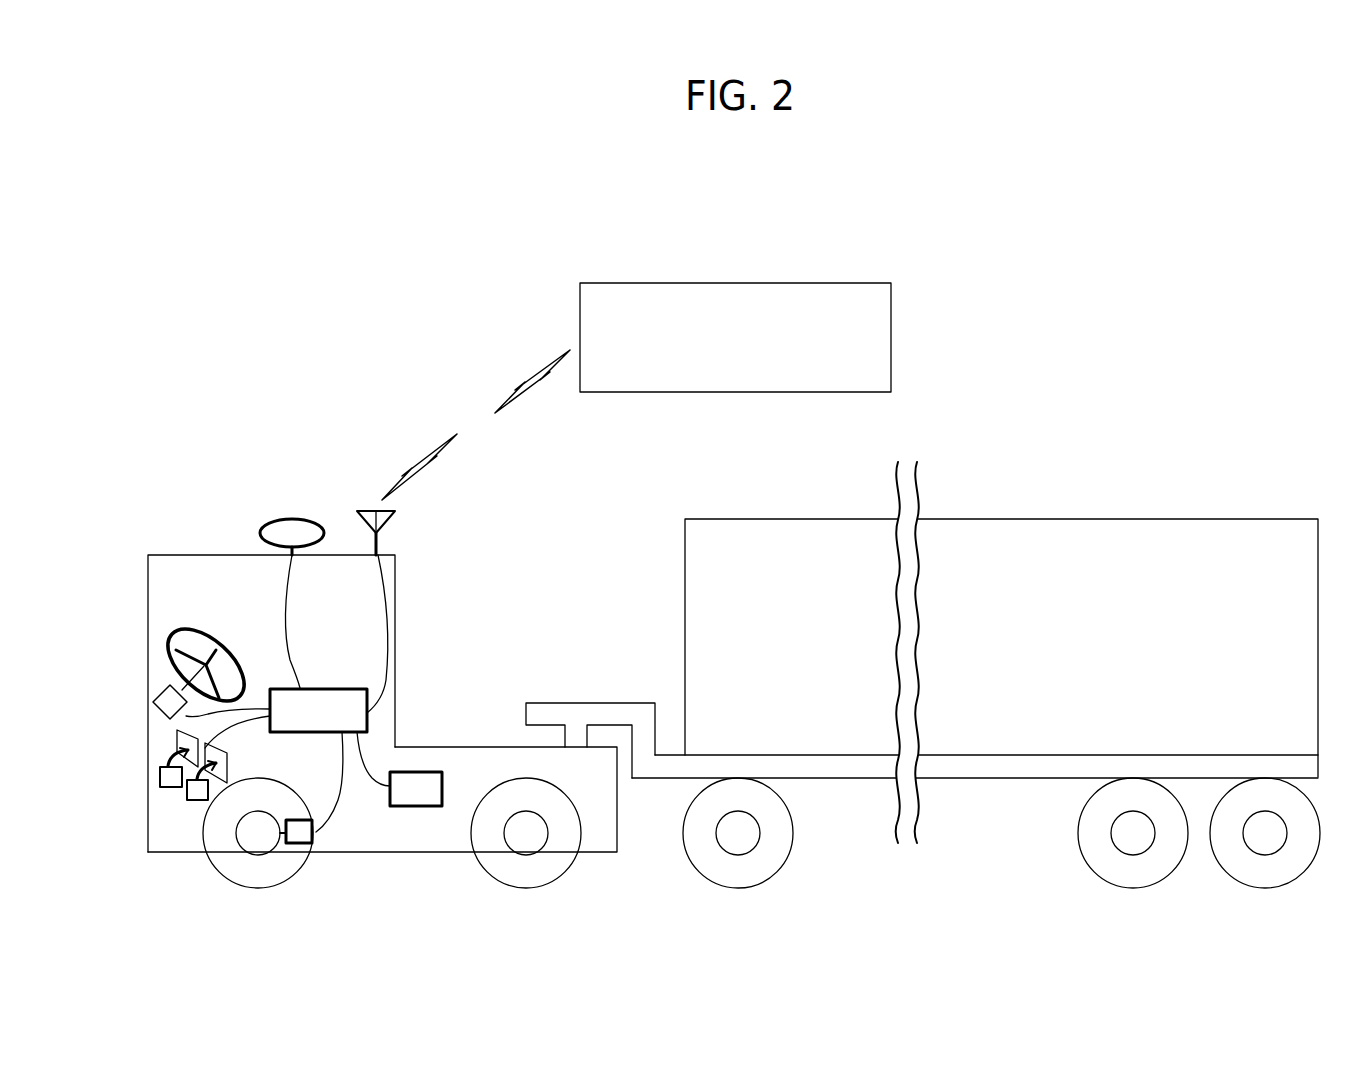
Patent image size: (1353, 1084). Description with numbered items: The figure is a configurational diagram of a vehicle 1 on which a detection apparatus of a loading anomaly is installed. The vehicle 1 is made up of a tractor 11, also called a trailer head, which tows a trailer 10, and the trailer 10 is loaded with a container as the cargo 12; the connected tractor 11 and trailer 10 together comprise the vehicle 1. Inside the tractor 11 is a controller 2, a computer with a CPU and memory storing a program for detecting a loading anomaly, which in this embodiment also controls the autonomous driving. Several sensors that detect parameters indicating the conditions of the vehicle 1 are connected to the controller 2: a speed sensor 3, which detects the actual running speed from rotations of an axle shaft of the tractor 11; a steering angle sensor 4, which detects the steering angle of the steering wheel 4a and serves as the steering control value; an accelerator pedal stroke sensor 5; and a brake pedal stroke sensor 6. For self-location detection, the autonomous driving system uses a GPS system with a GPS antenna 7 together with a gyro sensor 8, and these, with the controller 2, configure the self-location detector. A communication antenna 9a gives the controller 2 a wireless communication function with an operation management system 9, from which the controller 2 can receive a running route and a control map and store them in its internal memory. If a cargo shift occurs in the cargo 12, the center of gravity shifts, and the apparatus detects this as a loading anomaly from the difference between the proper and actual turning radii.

The vehicle 1 is at (664, 488).
The controller 2 is at (342, 688).
The speed sensor 3 is at (294, 845).
The steering angle sensor 4 is at (152, 697).
The steering wheel 4a is at (166, 637).
The accelerator pedal stroke sensor 5 is at (160, 769).
The brake pedal stroke sensor 6 is at (187, 790).
The GPS antenna 7 is at (277, 532).
The gyro sensor 8 is at (416, 788).
The operation management system 9 is at (632, 296).
The communication antenna 9a is at (392, 519).
The trailer 10 is at (981, 765).
The tractor 11 is at (198, 578).
The cargo 12 is at (1210, 540).